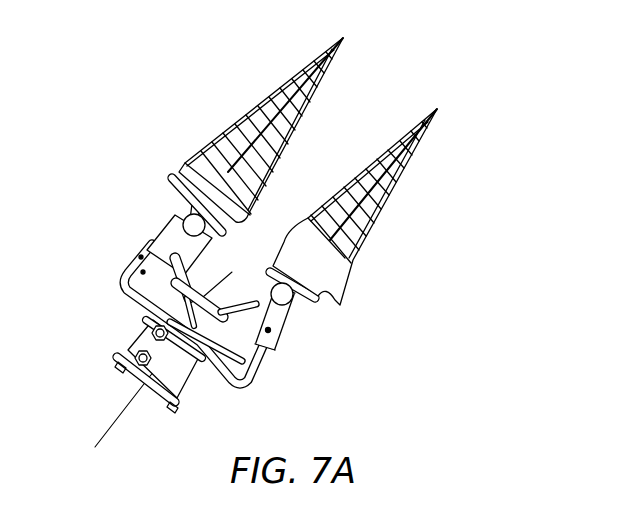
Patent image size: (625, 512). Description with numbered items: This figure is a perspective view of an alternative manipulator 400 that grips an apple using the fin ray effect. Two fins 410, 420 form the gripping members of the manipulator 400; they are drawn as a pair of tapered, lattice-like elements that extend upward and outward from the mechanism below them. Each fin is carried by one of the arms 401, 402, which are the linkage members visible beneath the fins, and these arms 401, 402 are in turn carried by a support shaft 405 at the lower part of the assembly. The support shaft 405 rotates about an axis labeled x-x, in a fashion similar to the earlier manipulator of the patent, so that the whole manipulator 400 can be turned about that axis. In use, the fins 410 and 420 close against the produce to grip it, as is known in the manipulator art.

The alternative manipulator 400 is at (446, 67).
The arm 401 is at (150, 245).
The arm 402 is at (283, 337).
The support shaft 405 is at (122, 377).
The fin 410 is at (307, 62).
The fin 420 is at (410, 173).